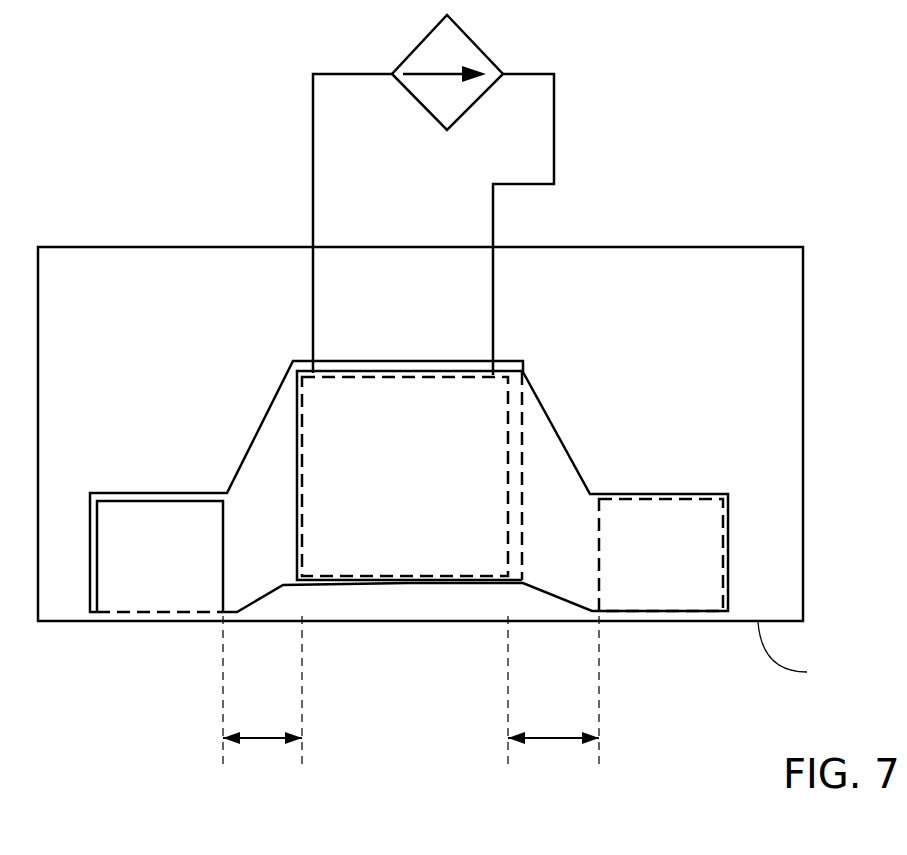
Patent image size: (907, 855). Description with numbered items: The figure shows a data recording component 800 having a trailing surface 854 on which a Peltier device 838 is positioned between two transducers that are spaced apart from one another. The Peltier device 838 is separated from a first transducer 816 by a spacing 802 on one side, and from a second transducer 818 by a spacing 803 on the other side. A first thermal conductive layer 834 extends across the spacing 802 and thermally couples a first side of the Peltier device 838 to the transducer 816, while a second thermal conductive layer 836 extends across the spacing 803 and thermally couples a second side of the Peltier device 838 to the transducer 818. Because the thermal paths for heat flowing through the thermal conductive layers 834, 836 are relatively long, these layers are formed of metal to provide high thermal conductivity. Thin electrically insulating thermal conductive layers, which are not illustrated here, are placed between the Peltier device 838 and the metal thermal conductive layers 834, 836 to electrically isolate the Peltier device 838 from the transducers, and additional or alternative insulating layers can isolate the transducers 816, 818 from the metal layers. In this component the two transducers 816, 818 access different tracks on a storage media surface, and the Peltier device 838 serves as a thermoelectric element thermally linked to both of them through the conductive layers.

The data recording component 800 is at (762, 135).
The trailing surface 854 is at (729, 307).
The transducer 816 is at (181, 572).
The transducer 818 is at (615, 499).
The first thermal conductive layer 834 is at (283, 550).
The second thermal conductive layer 836 is at (585, 560).
The Peltier device 838 is at (325, 578).
The spacing 802 is at (260, 740).
The spacing 803 is at (558, 740).